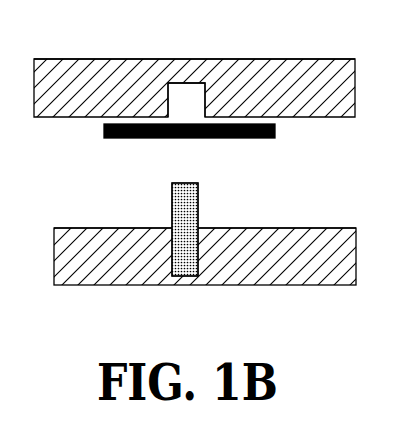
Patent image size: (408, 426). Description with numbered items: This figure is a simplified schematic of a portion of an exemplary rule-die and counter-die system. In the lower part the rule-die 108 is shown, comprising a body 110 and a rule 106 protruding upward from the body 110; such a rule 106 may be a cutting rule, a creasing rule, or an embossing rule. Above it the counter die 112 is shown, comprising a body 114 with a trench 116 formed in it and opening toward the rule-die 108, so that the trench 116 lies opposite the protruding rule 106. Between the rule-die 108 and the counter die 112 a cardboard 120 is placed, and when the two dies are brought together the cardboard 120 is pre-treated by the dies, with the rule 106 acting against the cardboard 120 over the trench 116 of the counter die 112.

The rule 106 is at (197, 206).
The rule-die 108 is at (356, 232).
The body 110 is at (282, 238).
The counter die 112 is at (355, 76).
The body 114 is at (293, 75).
The trench 116 is at (183, 97).
The cardboard 120 is at (277, 131).